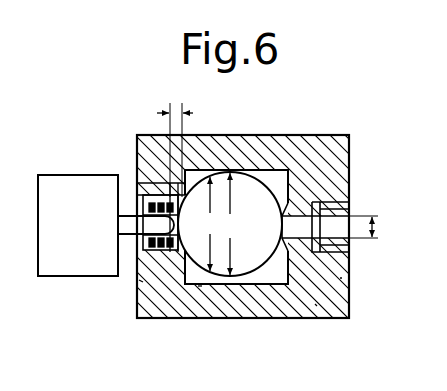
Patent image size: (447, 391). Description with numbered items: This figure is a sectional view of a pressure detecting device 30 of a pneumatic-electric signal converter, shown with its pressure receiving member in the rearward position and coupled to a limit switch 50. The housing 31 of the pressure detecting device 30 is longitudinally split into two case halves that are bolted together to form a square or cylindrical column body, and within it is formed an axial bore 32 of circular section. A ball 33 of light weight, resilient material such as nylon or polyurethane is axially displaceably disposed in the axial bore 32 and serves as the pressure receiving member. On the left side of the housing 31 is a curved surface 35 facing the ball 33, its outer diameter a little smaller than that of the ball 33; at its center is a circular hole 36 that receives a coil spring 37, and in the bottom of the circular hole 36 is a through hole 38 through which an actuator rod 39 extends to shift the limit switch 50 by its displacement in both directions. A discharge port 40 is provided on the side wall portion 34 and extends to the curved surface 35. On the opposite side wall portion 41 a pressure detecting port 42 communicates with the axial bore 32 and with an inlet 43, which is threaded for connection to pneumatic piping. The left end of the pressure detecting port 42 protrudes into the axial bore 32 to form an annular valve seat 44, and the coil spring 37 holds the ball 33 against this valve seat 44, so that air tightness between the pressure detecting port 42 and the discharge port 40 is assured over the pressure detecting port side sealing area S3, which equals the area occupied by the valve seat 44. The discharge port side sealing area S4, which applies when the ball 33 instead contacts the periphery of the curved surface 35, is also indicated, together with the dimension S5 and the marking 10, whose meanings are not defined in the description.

The pressure detecting device 30 is at (333, 133).
The housing 31 is at (240, 150).
The axial bore 32 is at (277, 183).
The ball 33 is at (247, 264).
The side wall portion 34 is at (140, 281).
The curved surface 35 is at (200, 287).
The circular hole 36 is at (150, 245).
The coil spring 37 is at (167, 247).
The through hole 38 is at (138, 200).
The actuator rod 39 is at (128, 225).
The discharge port 40 is at (145, 196).
The opposite side wall portion 41 is at (342, 278).
The pressure detecting port 42 is at (316, 305).
The inlet 43 is at (345, 210).
The annular valve seat 44 is at (287, 246).
The limit switch 50 is at (53, 187).
The offset distance 10 is at (183, 78).
The pressure detecting port side sealing area S3 is at (377, 227).
The discharge port side sealing area S4 is at (207, 224).
The chamber width S5 is at (243, 224).